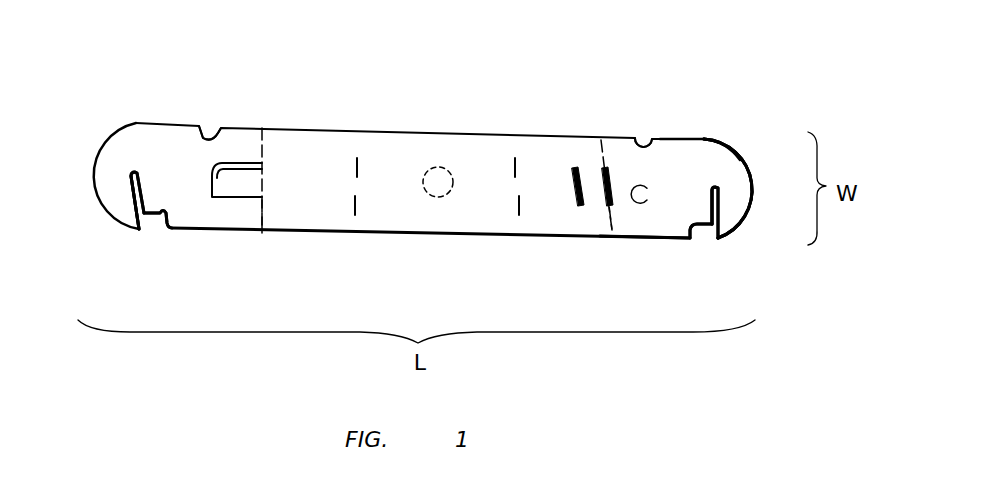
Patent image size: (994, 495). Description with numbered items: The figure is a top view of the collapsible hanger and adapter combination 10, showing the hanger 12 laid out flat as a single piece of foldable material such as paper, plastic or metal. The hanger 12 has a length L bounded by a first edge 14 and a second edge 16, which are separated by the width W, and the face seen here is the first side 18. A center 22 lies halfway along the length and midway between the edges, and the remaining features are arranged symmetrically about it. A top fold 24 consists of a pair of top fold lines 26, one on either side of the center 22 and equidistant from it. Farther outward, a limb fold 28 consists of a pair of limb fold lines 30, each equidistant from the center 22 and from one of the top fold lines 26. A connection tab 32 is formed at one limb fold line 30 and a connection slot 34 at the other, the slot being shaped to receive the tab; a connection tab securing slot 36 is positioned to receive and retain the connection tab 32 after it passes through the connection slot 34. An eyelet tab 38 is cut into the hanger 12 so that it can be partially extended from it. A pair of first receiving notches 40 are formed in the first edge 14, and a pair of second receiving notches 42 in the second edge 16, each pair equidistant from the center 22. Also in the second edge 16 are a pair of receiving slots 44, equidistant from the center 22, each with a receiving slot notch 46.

The collapsible hanger and adapter combination 10 is at (750, 70).
The hanger 12 is at (550, 157).
The first edge 14 is at (690, 139).
The second edge 16 is at (683, 240).
The first side 18 is at (700, 158).
The center 22 is at (443, 177).
The top fold 24 is at (368, 162).
The top fold lines 26 is at (520, 207).
The limb fold 28 is at (245, 223).
The limb fold lines 30 is at (257, 222).
The connection tab 32 is at (228, 177).
The connection slot 34 is at (607, 207).
The connection tab securing slot 36 is at (577, 203).
The eyelet tab 38 is at (641, 192).
The first receiving notches 40 is at (199, 127).
The second receiving notches 42 is at (168, 204).
The receiving slots 44 is at (122, 208).
The receiving slot notch 46 is at (131, 173).